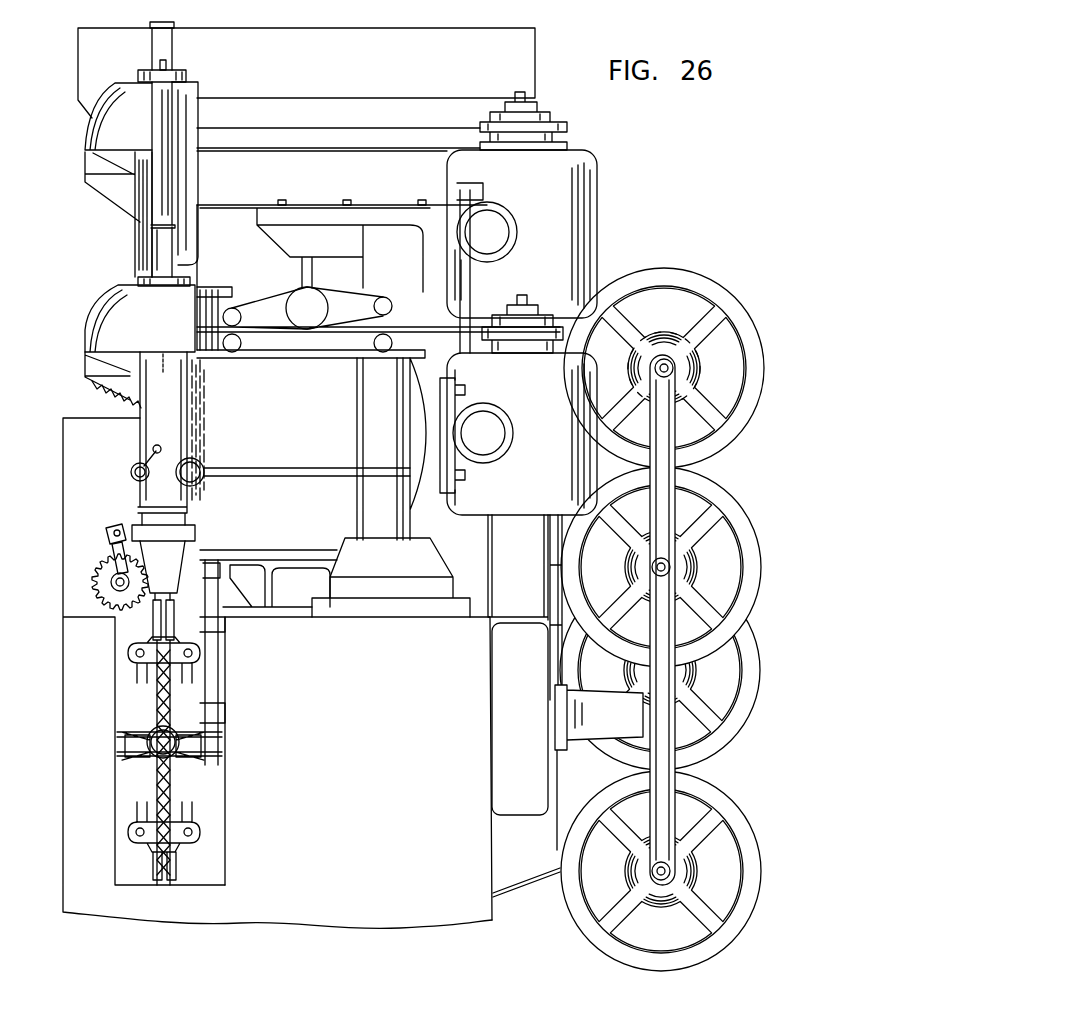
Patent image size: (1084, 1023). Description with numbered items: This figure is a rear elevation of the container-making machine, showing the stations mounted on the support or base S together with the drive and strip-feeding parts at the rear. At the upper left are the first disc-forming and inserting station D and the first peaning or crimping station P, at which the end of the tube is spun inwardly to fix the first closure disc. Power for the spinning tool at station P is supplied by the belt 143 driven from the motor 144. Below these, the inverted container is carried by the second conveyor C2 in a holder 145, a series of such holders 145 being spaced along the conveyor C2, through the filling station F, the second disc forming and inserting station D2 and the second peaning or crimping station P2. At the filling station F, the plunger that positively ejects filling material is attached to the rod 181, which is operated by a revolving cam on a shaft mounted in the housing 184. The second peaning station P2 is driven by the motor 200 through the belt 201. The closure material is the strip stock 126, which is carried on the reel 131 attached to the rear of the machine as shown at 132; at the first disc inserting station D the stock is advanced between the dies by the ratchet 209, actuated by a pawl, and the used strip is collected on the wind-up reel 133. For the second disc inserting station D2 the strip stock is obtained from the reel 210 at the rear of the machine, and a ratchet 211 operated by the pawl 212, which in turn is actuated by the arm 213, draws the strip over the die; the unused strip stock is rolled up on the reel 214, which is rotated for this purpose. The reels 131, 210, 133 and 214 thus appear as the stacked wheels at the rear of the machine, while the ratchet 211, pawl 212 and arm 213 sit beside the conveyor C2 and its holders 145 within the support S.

The rod 181 is at (170, 68).
The housing 184 is at (192, 116).
The filling station F is at (204, 178).
The first peaning or crimping station P is at (84, 132).
The first disc-forming and inserting station D is at (86, 182).
The second peaning or crimping station P2 is at (88, 316).
The second disc forming and inserting station D2 is at (88, 376).
The ratchet 209 is at (92, 392).
The arm 213 is at (140, 525).
The pawl 212 is at (112, 566).
The ratchet 211 is at (92, 586).
The support or base S is at (60, 745).
The belt 201 is at (277, 333).
The belt 143 is at (386, 127).
The motor 144 is at (598, 210).
The motor 200 is at (548, 396).
The wind-up reel 133 is at (752, 700).
The reel 131 is at (728, 285).
The strip stock 126 is at (625, 328).
The reel 210 is at (716, 478).
The reel 214 is at (720, 790).
The attachment of reel 132 is at (676, 418).
The second conveyor C2 is at (172, 777).
The holder 145 is at (135, 648).